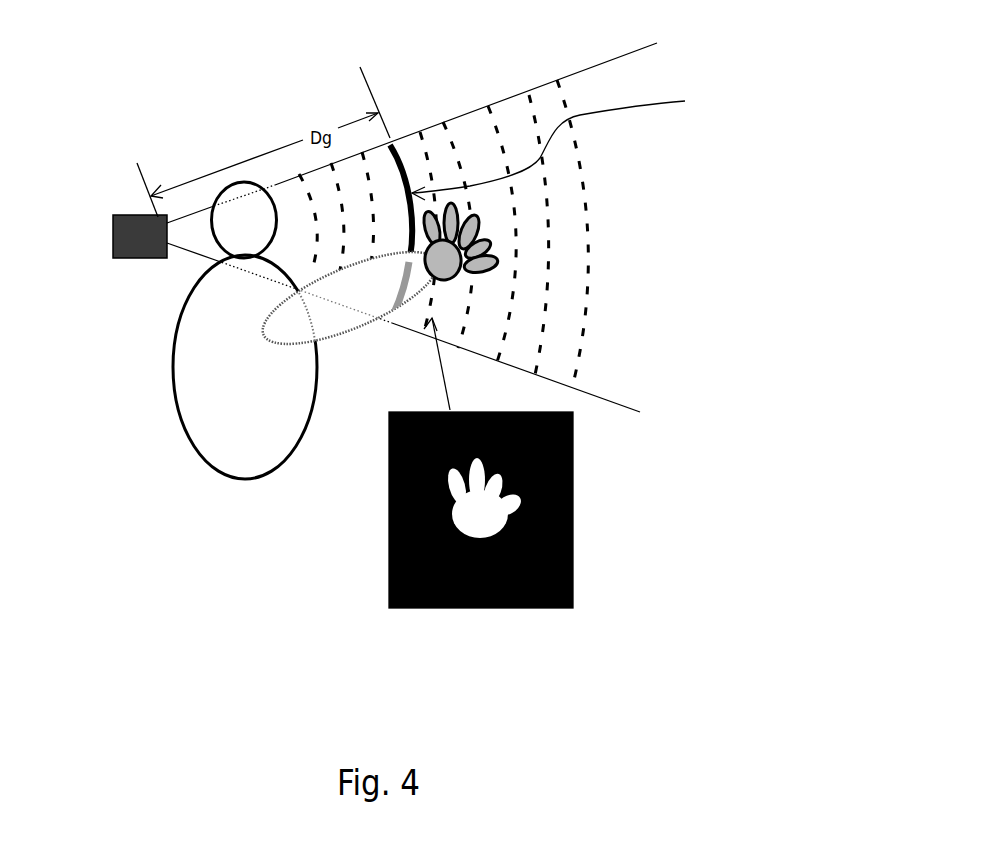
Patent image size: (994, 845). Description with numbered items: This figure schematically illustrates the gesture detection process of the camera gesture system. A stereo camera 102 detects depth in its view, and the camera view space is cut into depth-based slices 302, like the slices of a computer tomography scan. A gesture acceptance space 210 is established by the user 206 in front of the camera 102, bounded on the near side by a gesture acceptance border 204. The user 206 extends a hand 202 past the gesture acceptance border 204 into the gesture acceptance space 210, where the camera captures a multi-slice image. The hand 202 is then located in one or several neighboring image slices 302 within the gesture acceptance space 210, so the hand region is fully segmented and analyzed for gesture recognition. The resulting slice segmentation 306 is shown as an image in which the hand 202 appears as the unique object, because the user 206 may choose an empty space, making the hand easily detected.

The camera 102 is at (348, 227).
The hand 202 is at (554, 299).
The gesture acceptance border 204 is at (412, 167).
The user 206 is at (179, 330).
The gesture acceptance space 210 is at (590, 226).
The slices 302 is at (460, 141).
The slice segmentation 306 is at (542, 479).